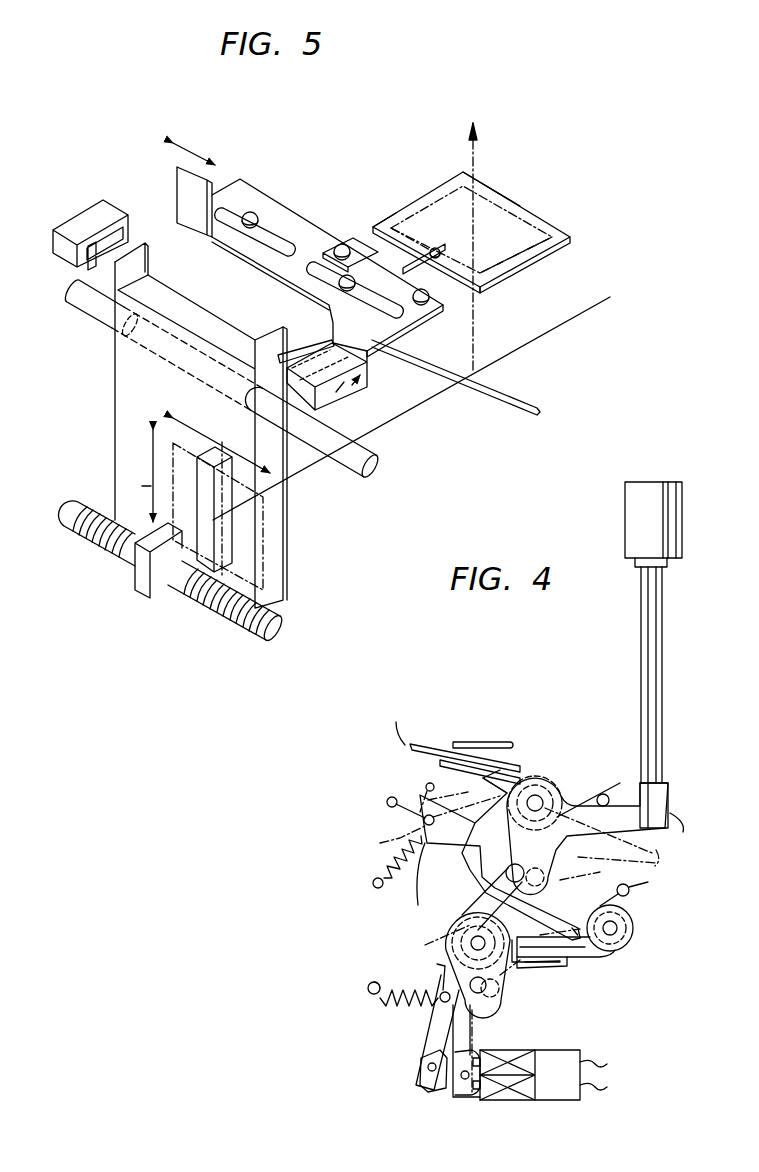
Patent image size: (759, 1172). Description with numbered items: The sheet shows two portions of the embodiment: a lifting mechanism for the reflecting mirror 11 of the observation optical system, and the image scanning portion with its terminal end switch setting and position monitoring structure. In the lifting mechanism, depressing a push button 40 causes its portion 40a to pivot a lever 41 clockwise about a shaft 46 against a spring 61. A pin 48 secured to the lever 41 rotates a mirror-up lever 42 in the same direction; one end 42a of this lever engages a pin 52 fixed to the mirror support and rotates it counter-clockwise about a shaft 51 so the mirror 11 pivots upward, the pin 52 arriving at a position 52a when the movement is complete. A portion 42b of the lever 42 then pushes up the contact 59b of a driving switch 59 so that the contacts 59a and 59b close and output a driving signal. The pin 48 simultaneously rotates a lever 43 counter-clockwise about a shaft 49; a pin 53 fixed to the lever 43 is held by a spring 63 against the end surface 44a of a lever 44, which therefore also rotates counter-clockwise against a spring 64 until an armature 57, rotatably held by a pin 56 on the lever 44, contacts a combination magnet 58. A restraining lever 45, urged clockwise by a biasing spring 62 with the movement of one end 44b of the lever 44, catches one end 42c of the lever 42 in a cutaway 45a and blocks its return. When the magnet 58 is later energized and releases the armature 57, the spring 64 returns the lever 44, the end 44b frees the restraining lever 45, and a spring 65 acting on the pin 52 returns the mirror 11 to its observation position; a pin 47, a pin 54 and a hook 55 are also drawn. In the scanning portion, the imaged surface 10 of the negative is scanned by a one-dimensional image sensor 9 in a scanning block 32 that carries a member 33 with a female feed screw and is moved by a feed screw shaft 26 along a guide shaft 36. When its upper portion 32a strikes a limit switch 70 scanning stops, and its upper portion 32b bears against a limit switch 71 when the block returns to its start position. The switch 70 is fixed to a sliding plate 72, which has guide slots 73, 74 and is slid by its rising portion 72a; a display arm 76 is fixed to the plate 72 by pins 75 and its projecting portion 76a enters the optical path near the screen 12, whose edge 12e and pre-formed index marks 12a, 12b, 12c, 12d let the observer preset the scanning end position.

In FIG. 5, the one-dimensional image sensor 9 is at (226, 456).
In FIG. 5, the imaged surface 10 is at (264, 563).
In FIG. 5, the reflecting mirror 11 is at (528, 412).
In FIG. 5, the screen 12 is at (530, 223).
In FIG. 5, the index mark 12a is at (386, 222).
In FIG. 5, the index mark 12b is at (406, 240).
In FIG. 5, the index mark 12c is at (462, 273).
In FIG. 5, the index mark 12d is at (488, 289).
In FIG. 5, the plate edge 12e is at (510, 200).
In FIG. 5, the feed screw shaft 26 is at (282, 632).
In FIG. 5, the scanning block 32 is at (115, 418).
In FIG. 5, the upper portion of scanning block 32a is at (270, 333).
In FIG. 5, the upper portion of scanning block 32b is at (148, 262).
In FIG. 5, the member having a female feed screw 33 is at (150, 600).
In FIG. 5, the guide shaft 36 is at (375, 470).
In FIG. 5, the limit switch 70 is at (360, 390).
In FIG. 5, the limit switch 71 is at (84, 215).
In FIG. 5, the sliding plate 72 is at (240, 178).
In FIG. 5, the rising portion 72a is at (178, 178).
In FIG. 5, the guide slot 73 is at (258, 222).
In FIG. 5, the guide slot 74 is at (352, 291).
In FIG. 5, the pin 75 is at (342, 246).
In FIG. 5, the display arm 76 is at (436, 291).
In FIG. 5, the projecting portion 76a is at (441, 252).
In FIG. 4, the push button 40 is at (683, 510).
In FIG. 4, the portion of push button 40a is at (662, 682).
In FIG. 4, the lever 41 is at (670, 818).
In FIG. 4, the mirror-up lever 42 is at (440, 849).
In FIG. 4, the end of mirror-up lever 42a is at (417, 900).
In FIG. 4, the portion of mirror-up lever 42b is at (484, 782).
In FIG. 4, the end of mirror-up lever 42c is at (576, 925).
In FIG. 4, the lever 43 is at (464, 900).
In FIG. 4, the lever 44 is at (432, 1018).
In FIG. 4, the end surface of lever 44a is at (478, 1018).
In FIG. 4, the end of lever 44b is at (540, 975).
In FIG. 4, the restraining lever 45 is at (633, 940).
In FIG. 4, the cutaway 45a is at (583, 955).
In FIG. 4, the shaft 46 is at (541, 800).
In FIG. 4, the pin 47 is at (604, 793).
In FIG. 4, the pin 48 is at (591, 878).
In FIG. 4, the shaft 49 is at (470, 940).
In FIG. 4, the shaft 51 is at (390, 798).
In FIG. 4, the pin 52 is at (423, 820).
In FIG. 4, the position of pin 52a is at (427, 781).
In FIG. 4, the pin 53 is at (487, 1000).
In FIG. 4, the spring pin 54 is at (441, 979).
In FIG. 4, the spring hook 55 is at (370, 984).
In FIG. 4, the pin 56 is at (427, 1092).
In FIG. 4, the armature 57 is at (464, 1092).
In FIG. 4, the combination magnet 58 is at (552, 1048).
In FIG. 4, the driving switch 59 is at (458, 738).
In FIG. 4, the contact 59a is at (480, 740).
In FIG. 4, the contact 59b is at (526, 758).
In FIG. 4, the spring 61 is at (599, 792).
In FIG. 4, the biasing spring 62 is at (631, 894).
In FIG. 4, the spring 63 is at (427, 951).
In FIG. 4, the spring 64 is at (395, 1008).
In FIG. 4, the spring 65 is at (373, 880).